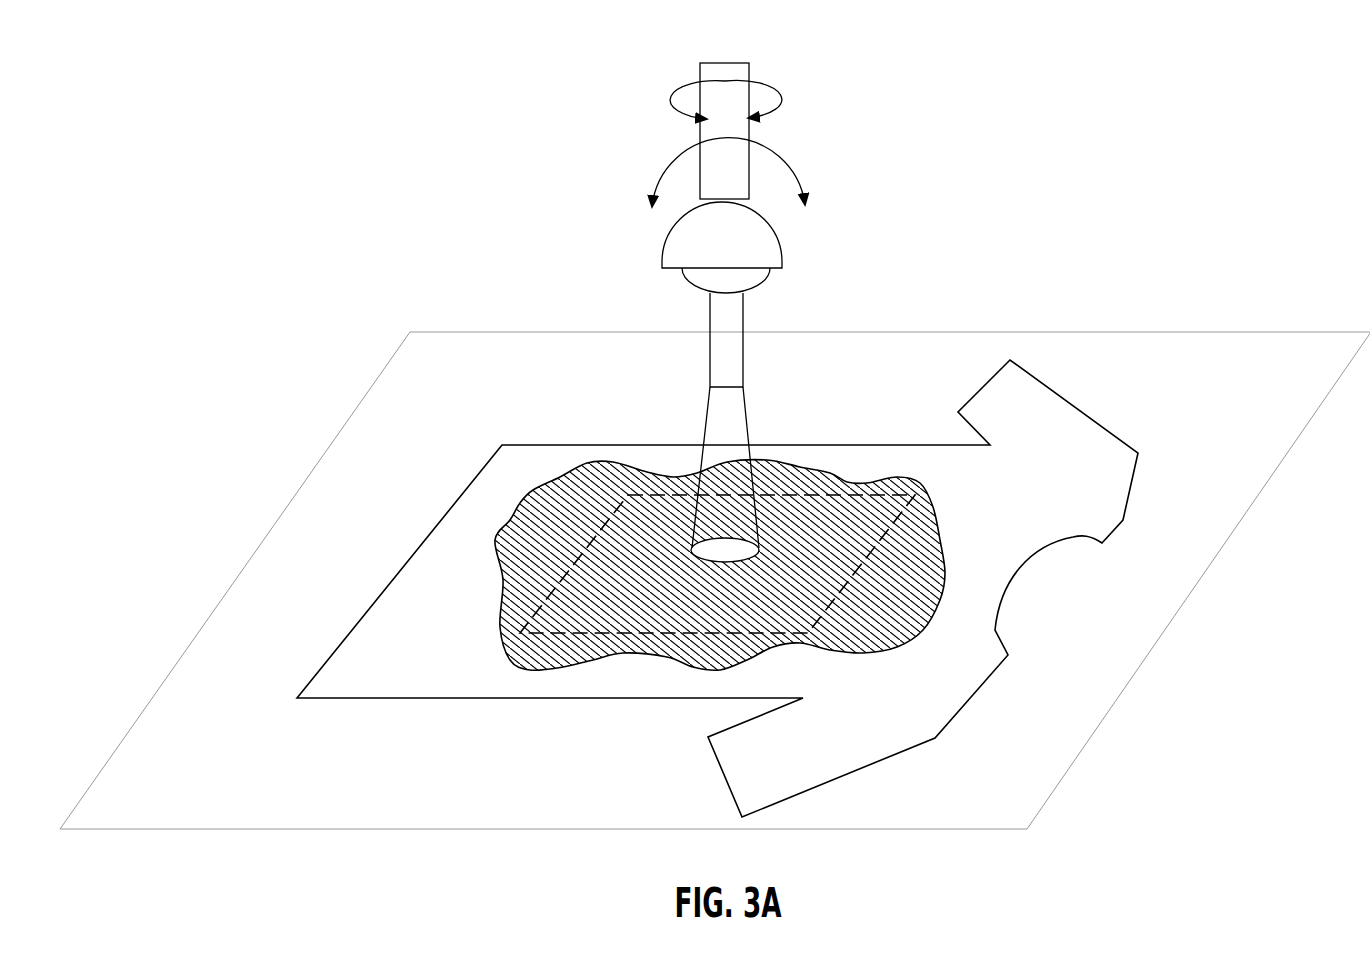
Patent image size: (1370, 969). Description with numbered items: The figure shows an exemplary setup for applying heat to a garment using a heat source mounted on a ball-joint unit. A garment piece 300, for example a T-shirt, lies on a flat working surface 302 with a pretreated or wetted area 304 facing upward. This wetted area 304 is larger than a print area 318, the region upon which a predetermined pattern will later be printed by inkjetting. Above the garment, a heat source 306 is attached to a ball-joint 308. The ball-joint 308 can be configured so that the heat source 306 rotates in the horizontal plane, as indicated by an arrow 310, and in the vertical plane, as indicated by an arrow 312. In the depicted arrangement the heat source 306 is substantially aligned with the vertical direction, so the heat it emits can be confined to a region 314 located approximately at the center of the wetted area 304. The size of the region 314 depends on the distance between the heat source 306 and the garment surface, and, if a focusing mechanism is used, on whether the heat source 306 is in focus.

The garment piece 300 is at (400, 698).
The flat working surface 302 is at (455, 358).
The wetted area 304 is at (927, 538).
The heat source 306 is at (743, 360).
The ball-joint 308 is at (783, 245).
The arrow 310 is at (770, 102).
The arrow 312 is at (668, 167).
The region 314 is at (718, 547).
The print area 318 is at (567, 633).